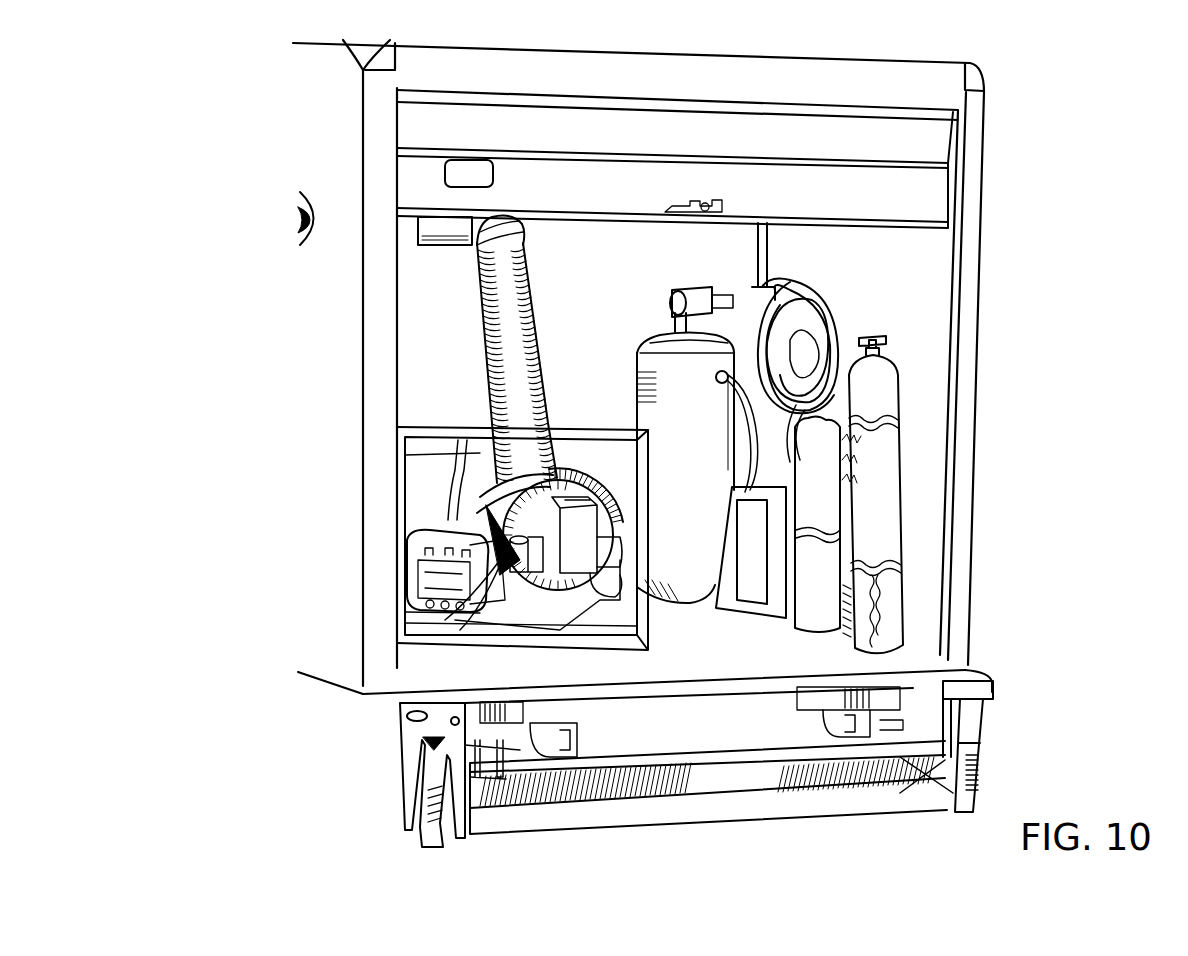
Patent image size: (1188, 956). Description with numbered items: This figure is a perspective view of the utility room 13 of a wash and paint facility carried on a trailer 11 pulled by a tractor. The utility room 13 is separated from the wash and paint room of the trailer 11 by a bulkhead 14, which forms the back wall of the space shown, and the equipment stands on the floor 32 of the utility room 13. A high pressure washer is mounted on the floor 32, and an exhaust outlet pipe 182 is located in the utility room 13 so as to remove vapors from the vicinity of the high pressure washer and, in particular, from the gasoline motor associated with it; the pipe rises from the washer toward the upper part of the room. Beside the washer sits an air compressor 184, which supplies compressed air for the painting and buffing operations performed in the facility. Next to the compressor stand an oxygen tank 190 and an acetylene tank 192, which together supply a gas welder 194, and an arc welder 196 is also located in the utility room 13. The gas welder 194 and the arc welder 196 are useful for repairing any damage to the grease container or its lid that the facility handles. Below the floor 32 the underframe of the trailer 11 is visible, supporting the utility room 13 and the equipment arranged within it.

The trailer 11 is at (965, 668).
The utility room 13 is at (968, 366).
The bulkhead 14 is at (600, 320).
The floor 32 is at (698, 661).
The exhaust outlet pipe 182 is at (294, 218).
The air compressor 184 is at (704, 402).
The oxygen tank 190 is at (892, 476).
The acetylene tank 192 is at (835, 476).
The gas welder 194 is at (767, 550).
The arc welder 196 is at (826, 307).